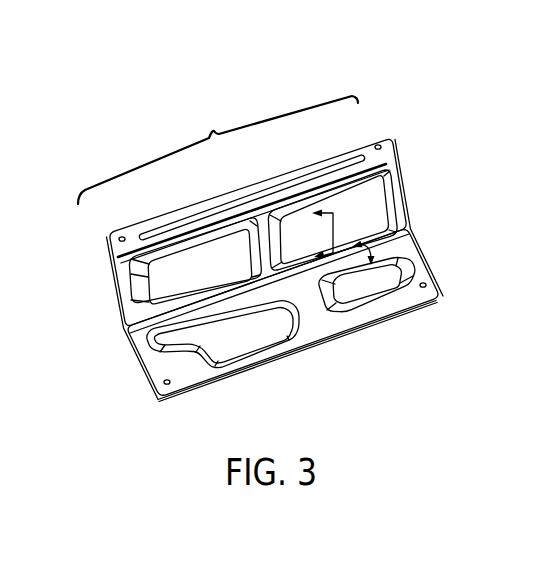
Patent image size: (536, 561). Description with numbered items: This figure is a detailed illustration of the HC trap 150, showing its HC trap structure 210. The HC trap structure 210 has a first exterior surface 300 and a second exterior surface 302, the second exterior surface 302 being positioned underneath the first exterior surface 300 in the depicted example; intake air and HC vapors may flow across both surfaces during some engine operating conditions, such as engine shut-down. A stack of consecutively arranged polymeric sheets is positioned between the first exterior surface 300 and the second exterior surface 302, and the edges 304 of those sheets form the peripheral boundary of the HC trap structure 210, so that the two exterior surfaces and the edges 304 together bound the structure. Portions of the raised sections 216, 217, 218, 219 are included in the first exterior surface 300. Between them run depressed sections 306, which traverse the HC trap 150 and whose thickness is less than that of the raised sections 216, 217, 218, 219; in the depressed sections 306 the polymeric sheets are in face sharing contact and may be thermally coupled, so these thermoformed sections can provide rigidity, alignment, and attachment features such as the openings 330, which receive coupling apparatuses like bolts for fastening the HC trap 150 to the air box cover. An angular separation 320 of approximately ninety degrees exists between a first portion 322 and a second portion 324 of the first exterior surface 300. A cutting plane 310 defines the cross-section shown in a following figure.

The HC trap 150 is at (121, 152).
The HC trap structure 210 is at (218, 150).
The raised section 216 is at (333, 296).
The raised section 217 is at (223, 336).
The raised section 218 is at (188, 284).
The raised section 219 is at (286, 246).
The first exterior surface 300 is at (303, 337).
The second exterior surface 302 is at (279, 356).
The edges 304 is at (160, 216).
The depressed sections 306 is at (165, 321).
The cutting plane 310 is at (333, 232).
The angular separation 320 is at (407, 231).
The first portion 322 is at (424, 189).
The second portion 324 is at (448, 266).
The openings 330 is at (118, 240).